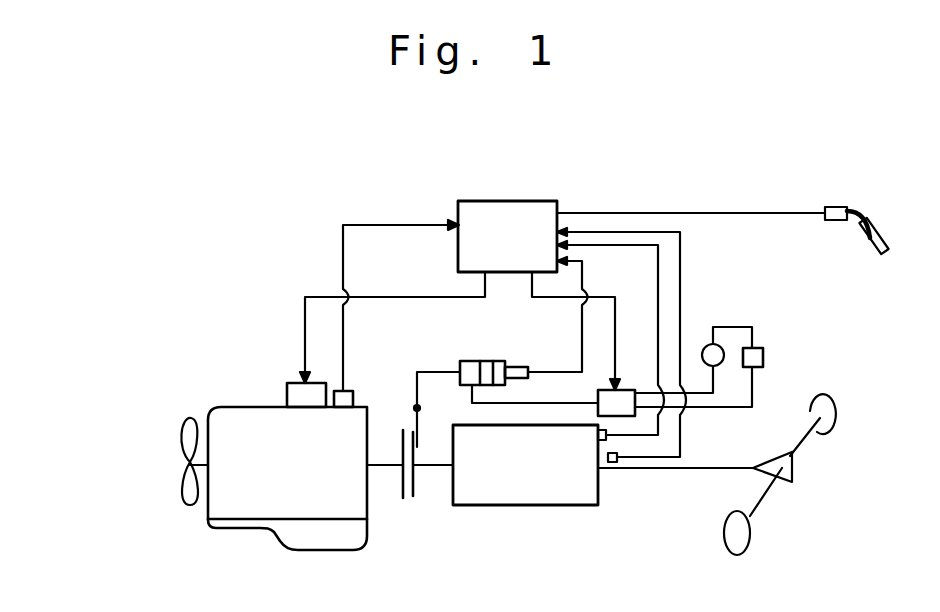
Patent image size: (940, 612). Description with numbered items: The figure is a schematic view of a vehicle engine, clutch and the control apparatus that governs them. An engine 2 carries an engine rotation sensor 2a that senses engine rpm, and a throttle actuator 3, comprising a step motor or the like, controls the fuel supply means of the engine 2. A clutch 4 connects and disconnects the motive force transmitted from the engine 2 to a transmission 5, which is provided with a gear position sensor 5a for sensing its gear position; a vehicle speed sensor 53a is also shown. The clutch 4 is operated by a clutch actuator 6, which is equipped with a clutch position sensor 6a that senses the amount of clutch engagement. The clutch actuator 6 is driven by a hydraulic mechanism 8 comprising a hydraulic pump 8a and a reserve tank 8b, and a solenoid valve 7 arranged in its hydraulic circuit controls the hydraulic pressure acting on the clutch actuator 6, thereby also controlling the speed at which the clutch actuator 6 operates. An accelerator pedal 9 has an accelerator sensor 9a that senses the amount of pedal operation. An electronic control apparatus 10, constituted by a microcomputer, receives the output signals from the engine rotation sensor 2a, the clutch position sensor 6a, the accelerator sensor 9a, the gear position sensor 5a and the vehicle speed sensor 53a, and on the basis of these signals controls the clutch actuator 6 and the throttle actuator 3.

The engine 2 is at (226, 418).
The engine rotation sensor 2a is at (350, 394).
The throttle actuator 3 is at (292, 383).
The clutch 4 is at (406, 503).
The transmission 5 is at (508, 494).
The gear position sensor 5a is at (609, 441).
The vehicle speed sensor 53a is at (614, 462).
The clutch actuator 6 is at (529, 330).
The clutch position sensor 6a is at (531, 380).
The solenoid valve 7 is at (598, 406).
The hydraulic mechanism 8 is at (722, 336).
The hydraulic pump 8a is at (710, 345).
The reserve tank 8b is at (757, 348).
The accelerator pedal 9 is at (875, 228).
The accelerator sensor 9a is at (836, 222).
The electronic control apparatus 10 is at (506, 207).